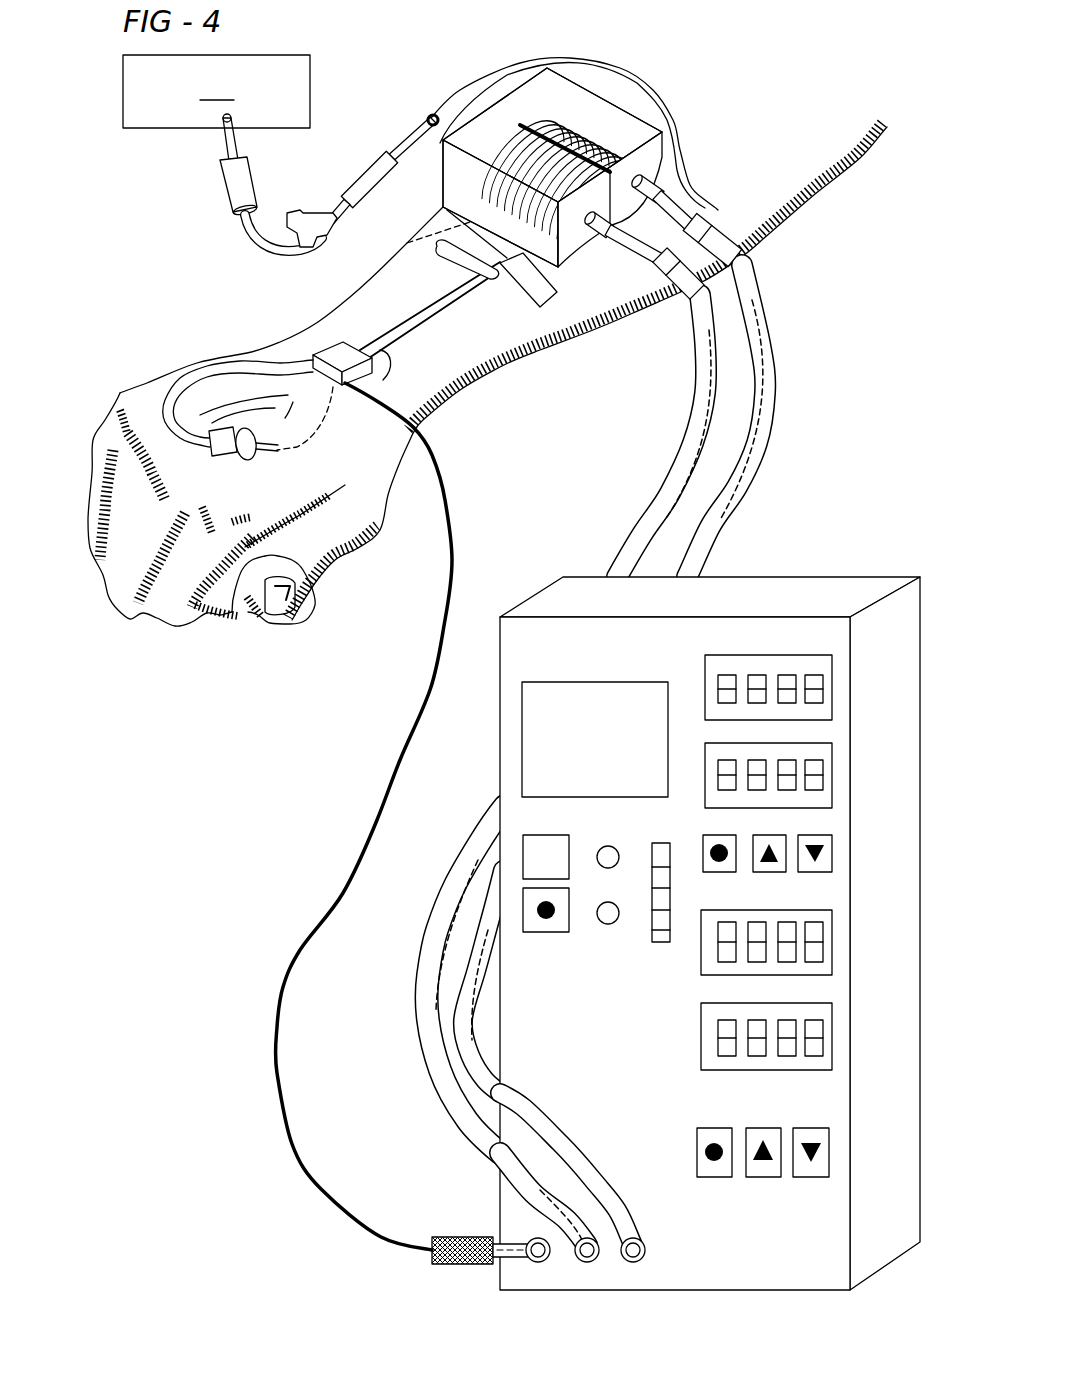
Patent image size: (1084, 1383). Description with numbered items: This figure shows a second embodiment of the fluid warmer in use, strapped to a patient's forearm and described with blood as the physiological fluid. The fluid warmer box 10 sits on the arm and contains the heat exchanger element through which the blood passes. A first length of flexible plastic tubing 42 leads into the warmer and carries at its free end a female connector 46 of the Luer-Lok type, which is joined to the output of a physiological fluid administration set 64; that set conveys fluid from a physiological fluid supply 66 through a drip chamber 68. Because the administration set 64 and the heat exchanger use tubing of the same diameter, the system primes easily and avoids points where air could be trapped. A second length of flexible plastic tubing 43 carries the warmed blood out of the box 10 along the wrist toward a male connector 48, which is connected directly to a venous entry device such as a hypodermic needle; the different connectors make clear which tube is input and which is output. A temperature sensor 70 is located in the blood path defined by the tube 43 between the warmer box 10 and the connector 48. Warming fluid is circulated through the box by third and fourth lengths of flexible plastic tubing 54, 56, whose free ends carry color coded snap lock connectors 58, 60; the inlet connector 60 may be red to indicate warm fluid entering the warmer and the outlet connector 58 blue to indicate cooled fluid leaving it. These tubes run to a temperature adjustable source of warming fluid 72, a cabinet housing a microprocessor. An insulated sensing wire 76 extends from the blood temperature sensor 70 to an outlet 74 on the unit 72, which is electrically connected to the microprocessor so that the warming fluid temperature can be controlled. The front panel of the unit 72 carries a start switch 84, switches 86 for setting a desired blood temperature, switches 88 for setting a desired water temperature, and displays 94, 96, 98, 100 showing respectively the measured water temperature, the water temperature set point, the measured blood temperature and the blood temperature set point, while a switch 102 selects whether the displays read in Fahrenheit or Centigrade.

The fluid warmer box 10 is at (443, 196).
The first length of flexible plastic tubing 42 is at (620, 66).
The second length of flexible plastic tubing 43 is at (378, 340).
The female connector 46 is at (347, 198).
The male connector 48 is at (250, 460).
The third length of flexible plastic tubing 54 is at (667, 207).
The fourth length of flexible plastic tubing 56 is at (632, 252).
The outlet connector 58 is at (735, 220).
The inlet connector 60 is at (666, 274).
The physiological fluid administration set 64 is at (288, 214).
The physiological fluid supply 66 is at (216, 91).
The drip chamber 68 is at (222, 192).
The temperature sensor 70 is at (313, 350).
The temperature adjustable source of warming fluid 72 is at (531, 594).
The outlet 74 is at (533, 1240).
The insulated sensing wire 76 is at (318, 1168).
The start switch 84 is at (540, 906).
The switches 86 is at (810, 1178).
The switches 88 is at (723, 868).
The display 94 is at (832, 690).
The display 96 is at (832, 775).
The display 98 is at (832, 942).
The display 100 is at (832, 1038).
The switch 102 is at (545, 843).